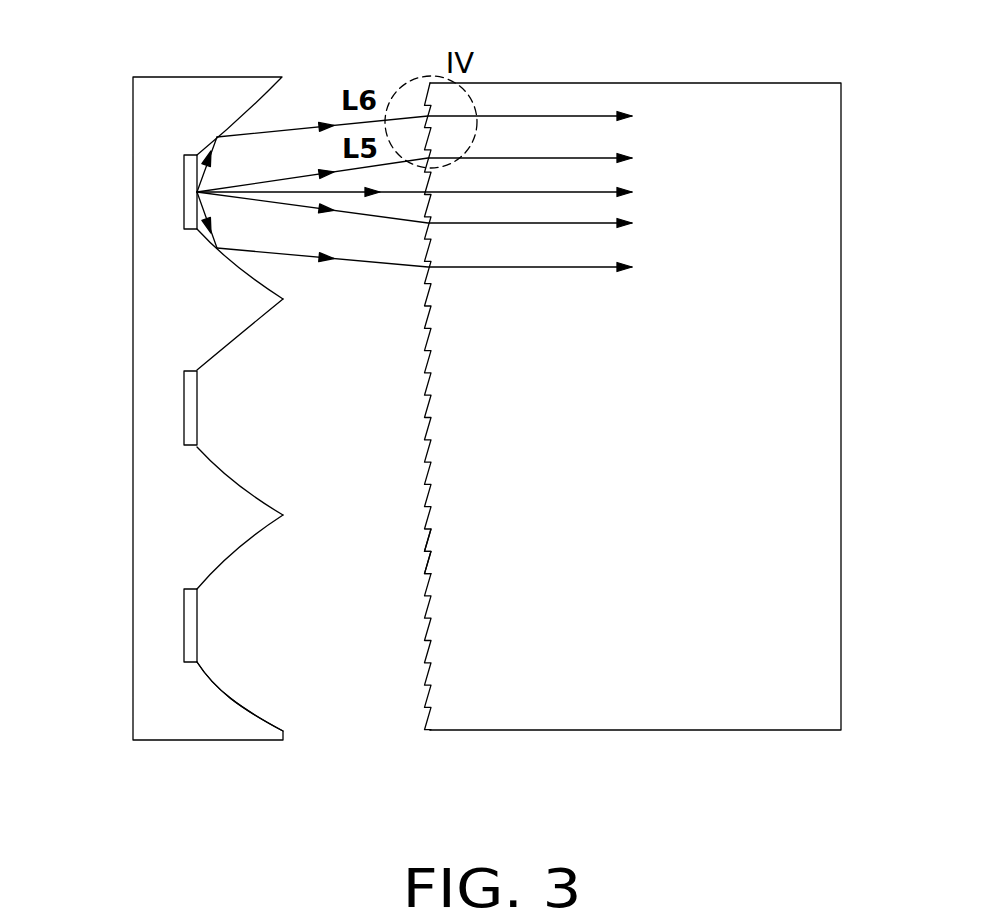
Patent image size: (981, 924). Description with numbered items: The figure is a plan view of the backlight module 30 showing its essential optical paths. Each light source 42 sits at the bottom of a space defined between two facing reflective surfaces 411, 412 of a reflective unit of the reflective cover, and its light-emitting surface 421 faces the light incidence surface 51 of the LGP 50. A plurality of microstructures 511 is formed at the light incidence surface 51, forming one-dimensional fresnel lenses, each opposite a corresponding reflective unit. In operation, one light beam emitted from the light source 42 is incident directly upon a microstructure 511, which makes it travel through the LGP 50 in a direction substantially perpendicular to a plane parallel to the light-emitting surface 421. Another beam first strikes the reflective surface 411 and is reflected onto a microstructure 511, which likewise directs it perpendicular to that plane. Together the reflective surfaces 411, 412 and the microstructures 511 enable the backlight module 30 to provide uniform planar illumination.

The backlight module 30 is at (220, 370).
The light source 42 is at (193, 197).
The reflective surface 411 is at (240, 333).
The light-emitting surface 421 is at (203, 625).
The reflective surface 412 is at (267, 713).
The LGP 50 is at (760, 357).
The light incidence surface 51 is at (423, 660).
The microstructures 511 is at (427, 555).